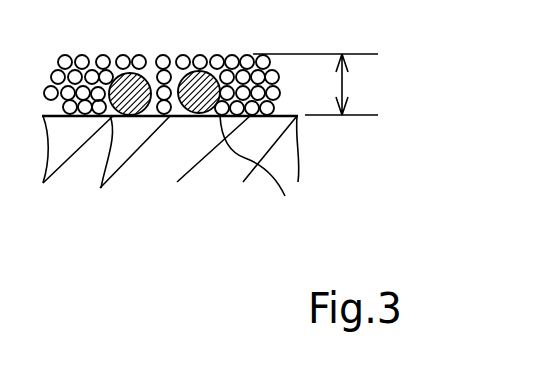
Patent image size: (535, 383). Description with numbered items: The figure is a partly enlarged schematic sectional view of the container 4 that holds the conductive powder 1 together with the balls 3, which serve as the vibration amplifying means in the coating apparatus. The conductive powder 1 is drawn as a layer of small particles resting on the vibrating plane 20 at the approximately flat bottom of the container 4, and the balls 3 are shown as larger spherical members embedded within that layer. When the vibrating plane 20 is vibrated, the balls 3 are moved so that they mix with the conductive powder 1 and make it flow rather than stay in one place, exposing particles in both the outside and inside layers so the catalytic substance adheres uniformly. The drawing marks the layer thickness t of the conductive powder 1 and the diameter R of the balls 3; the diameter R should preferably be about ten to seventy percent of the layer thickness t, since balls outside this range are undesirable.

The conductive powder 1 is at (102, 55).
The balls 3 is at (170, 165).
The container 4 is at (280, 167).
The vibrating plane 20 is at (297, 132).
The diameter R is at (263, 171).
The layer thickness t is at (315, 84).